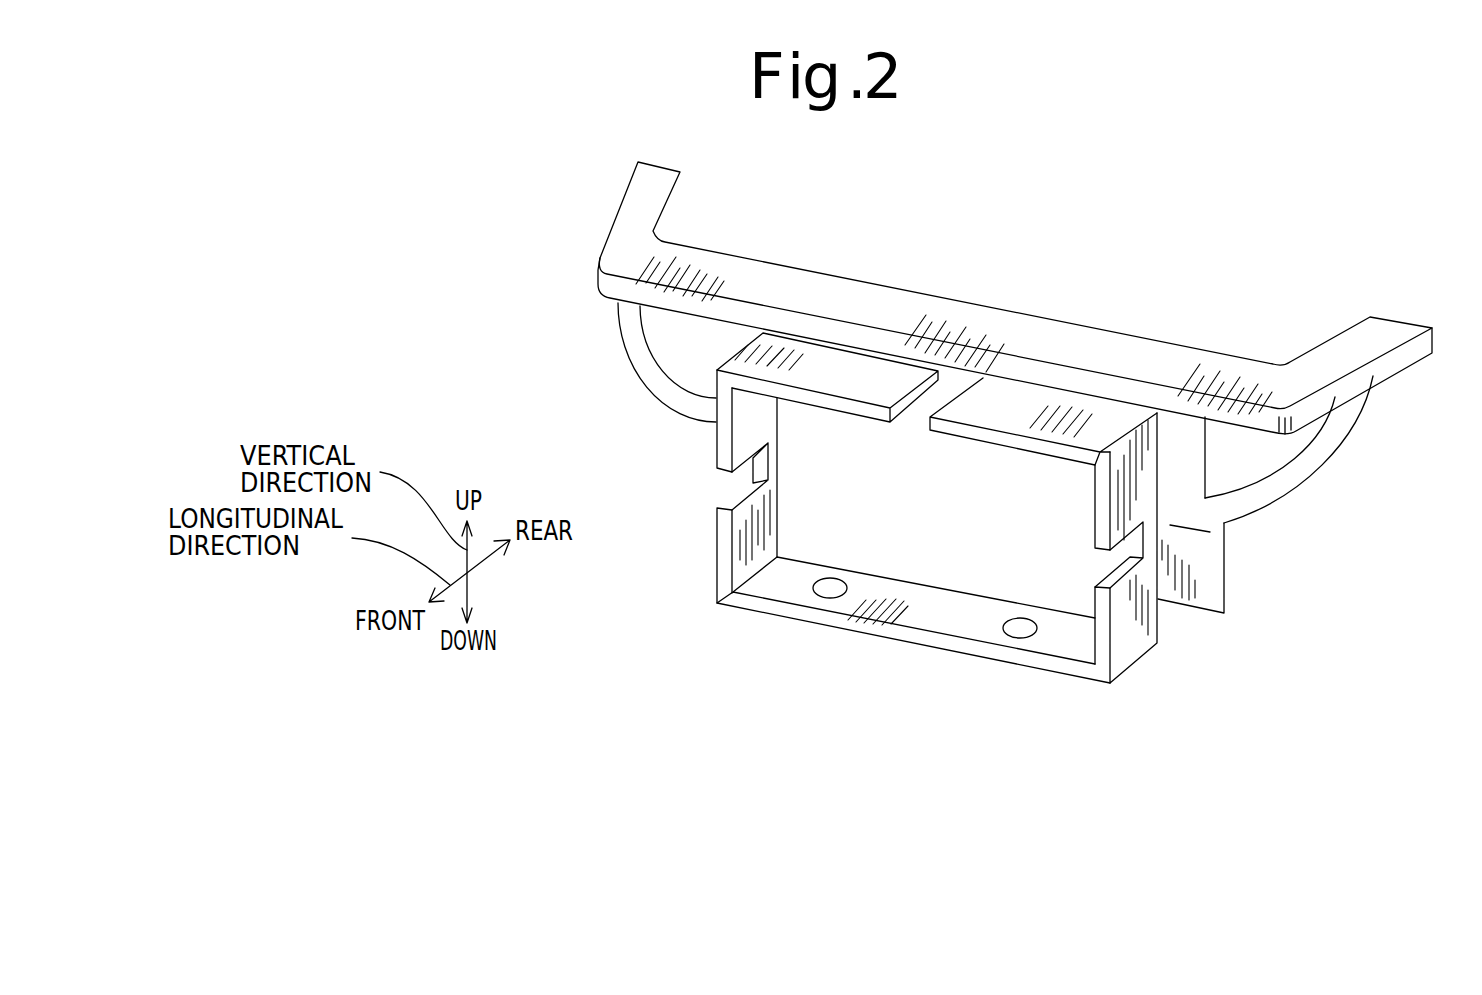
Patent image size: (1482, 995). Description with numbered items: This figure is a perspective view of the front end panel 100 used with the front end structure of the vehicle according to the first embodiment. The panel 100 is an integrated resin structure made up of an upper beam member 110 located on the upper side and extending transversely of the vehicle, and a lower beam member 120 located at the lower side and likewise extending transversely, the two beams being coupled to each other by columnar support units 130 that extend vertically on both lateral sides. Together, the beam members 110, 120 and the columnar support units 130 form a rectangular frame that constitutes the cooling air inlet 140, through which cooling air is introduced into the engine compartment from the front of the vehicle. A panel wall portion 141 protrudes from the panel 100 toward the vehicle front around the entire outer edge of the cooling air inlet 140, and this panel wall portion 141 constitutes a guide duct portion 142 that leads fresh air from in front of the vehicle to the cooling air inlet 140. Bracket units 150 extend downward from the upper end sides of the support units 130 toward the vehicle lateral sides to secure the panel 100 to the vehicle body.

The front end panel 100 is at (1068, 313).
The upper beam member 110 is at (912, 305).
The lower beam member 120 is at (987, 623).
The columnar support units 130 is at (1177, 493).
The cooling air inlet 140 is at (1003, 540).
The panel wall portion 141 is at (848, 362).
The guide duct portion 142 is at (750, 523).
The bracket units 150 is at (648, 367).